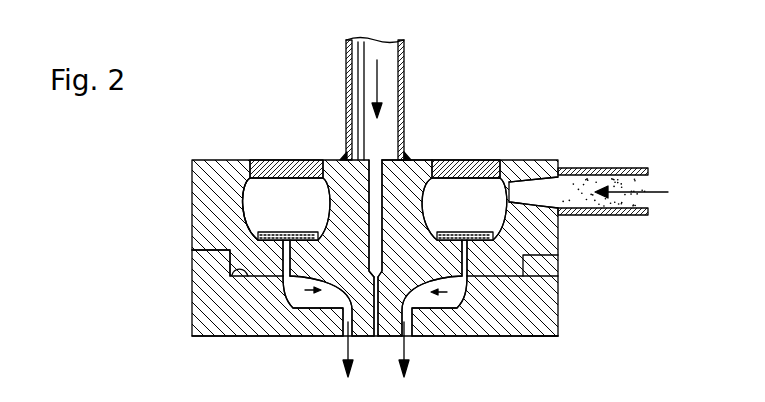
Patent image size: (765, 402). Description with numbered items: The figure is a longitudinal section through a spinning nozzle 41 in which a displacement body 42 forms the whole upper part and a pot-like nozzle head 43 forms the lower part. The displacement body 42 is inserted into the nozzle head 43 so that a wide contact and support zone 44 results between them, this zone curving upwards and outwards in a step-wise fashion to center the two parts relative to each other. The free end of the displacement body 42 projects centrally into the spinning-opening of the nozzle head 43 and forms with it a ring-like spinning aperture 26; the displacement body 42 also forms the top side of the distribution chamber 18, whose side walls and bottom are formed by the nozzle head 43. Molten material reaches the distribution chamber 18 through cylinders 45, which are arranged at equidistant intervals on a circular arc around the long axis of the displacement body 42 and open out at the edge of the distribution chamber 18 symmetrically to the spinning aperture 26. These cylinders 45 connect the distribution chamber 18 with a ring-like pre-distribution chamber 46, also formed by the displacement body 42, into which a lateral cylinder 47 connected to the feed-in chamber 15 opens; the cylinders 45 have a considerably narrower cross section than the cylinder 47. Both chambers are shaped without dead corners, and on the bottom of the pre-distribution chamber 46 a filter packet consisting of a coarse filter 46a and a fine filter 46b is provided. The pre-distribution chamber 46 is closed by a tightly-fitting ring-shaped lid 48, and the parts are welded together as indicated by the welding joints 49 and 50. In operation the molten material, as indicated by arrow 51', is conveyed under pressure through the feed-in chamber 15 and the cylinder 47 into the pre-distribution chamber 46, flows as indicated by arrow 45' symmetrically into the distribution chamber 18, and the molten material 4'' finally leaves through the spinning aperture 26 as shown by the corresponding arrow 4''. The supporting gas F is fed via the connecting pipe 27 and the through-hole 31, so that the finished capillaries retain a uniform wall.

The spinning nozzle 41 is at (560, 323).
The contact and support zone 44 is at (197, 294).
The nozzle head 43 is at (524, 325).
The welding joint 49 is at (192, 247).
The welding joint 50 is at (325, 160).
The ring-shaped lid 48 is at (478, 161).
The pre-distribution chamber 46 is at (288, 215).
The coarse filter 46a is at (270, 237).
The fine filter 46b is at (262, 248).
The cylinders 45 is at (375, 214).
The arrow 45' is at (389, 304).
The distribution chamber 18 is at (326, 302).
The through-hole 31 is at (377, 165).
The spinning aperture 26 is at (406, 328).
The displacement body 42 is at (417, 161).
The lateral cylinder 47 is at (531, 181).
The feed-in chamber 15 is at (587, 202).
The arrow 51' is at (646, 209).
The connecting pipe 27 is at (405, 60).
The supporting gas F is at (380, 80).
The molten material 4'' is at (376, 350).